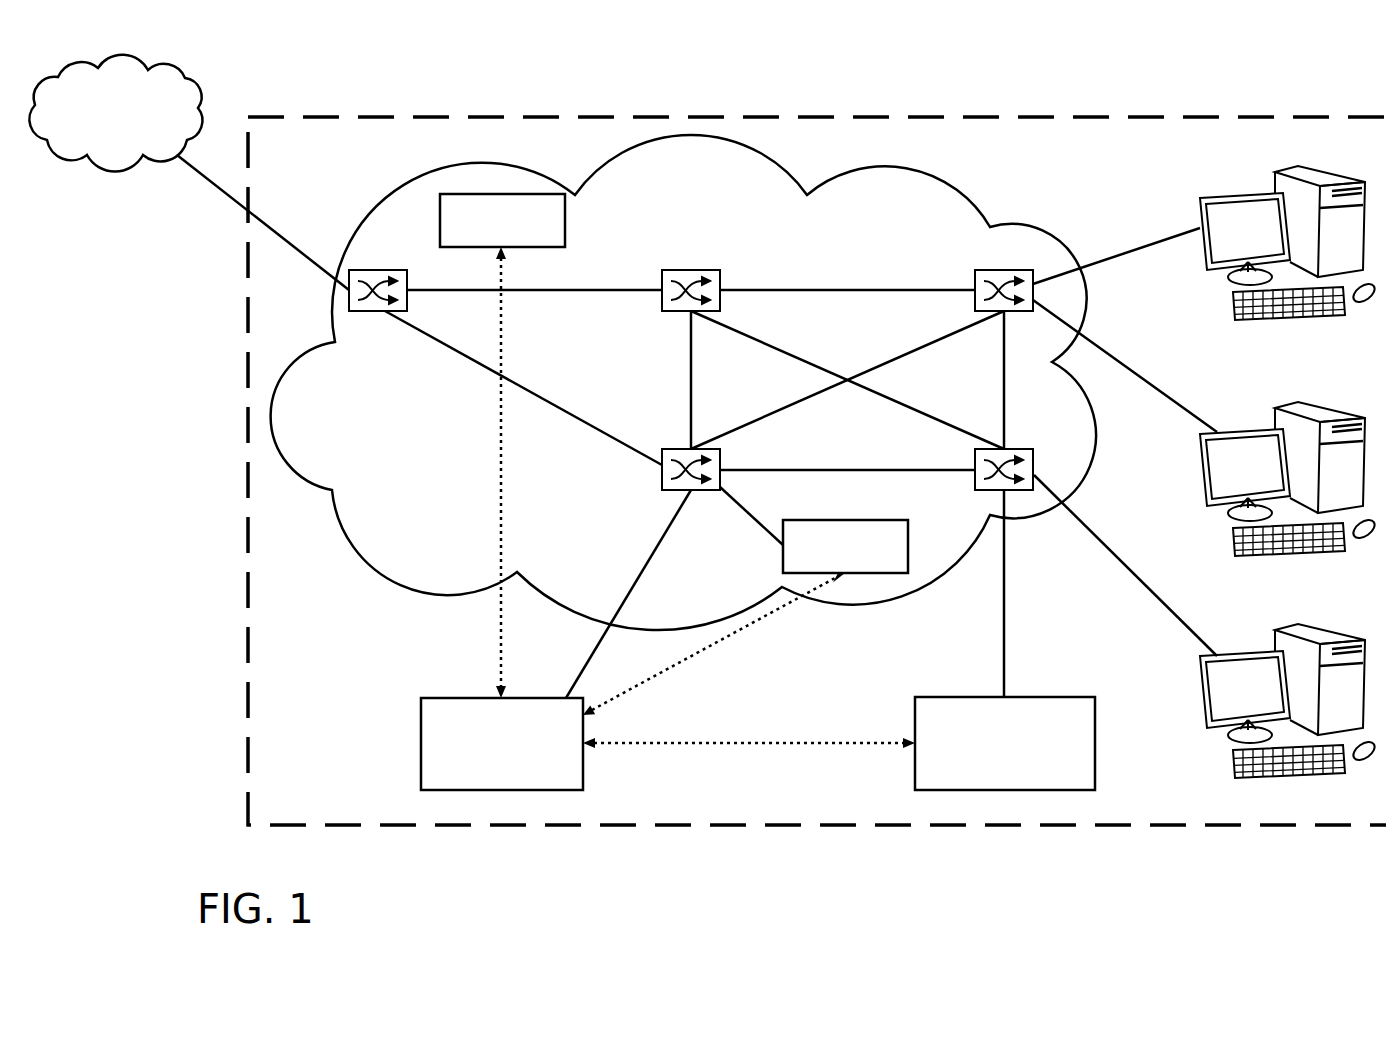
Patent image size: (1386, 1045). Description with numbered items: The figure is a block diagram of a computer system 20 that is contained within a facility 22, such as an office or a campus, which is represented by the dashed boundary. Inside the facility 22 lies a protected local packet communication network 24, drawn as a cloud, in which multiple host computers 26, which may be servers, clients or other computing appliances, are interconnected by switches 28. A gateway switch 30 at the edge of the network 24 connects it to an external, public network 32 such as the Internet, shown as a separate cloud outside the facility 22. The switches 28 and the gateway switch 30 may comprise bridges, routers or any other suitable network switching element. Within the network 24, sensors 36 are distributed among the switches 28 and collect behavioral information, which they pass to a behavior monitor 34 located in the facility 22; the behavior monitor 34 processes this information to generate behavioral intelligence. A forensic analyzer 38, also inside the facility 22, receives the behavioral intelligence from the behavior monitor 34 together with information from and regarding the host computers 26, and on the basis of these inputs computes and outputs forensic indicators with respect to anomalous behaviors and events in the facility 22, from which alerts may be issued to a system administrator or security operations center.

The computer system 20 is at (153, 812).
The facility 22 is at (248, 599).
The protected local packet communication network 24 is at (440, 606).
The host computers 26 is at (1202, 264).
The switches 28 is at (690, 270).
The gateway switch 30 is at (372, 311).
The external public network 32 is at (124, 170).
The behavior monitor 34 is at (421, 742).
The sensors 36 is at (501, 194).
The forensic analyzer 38 is at (1095, 742).